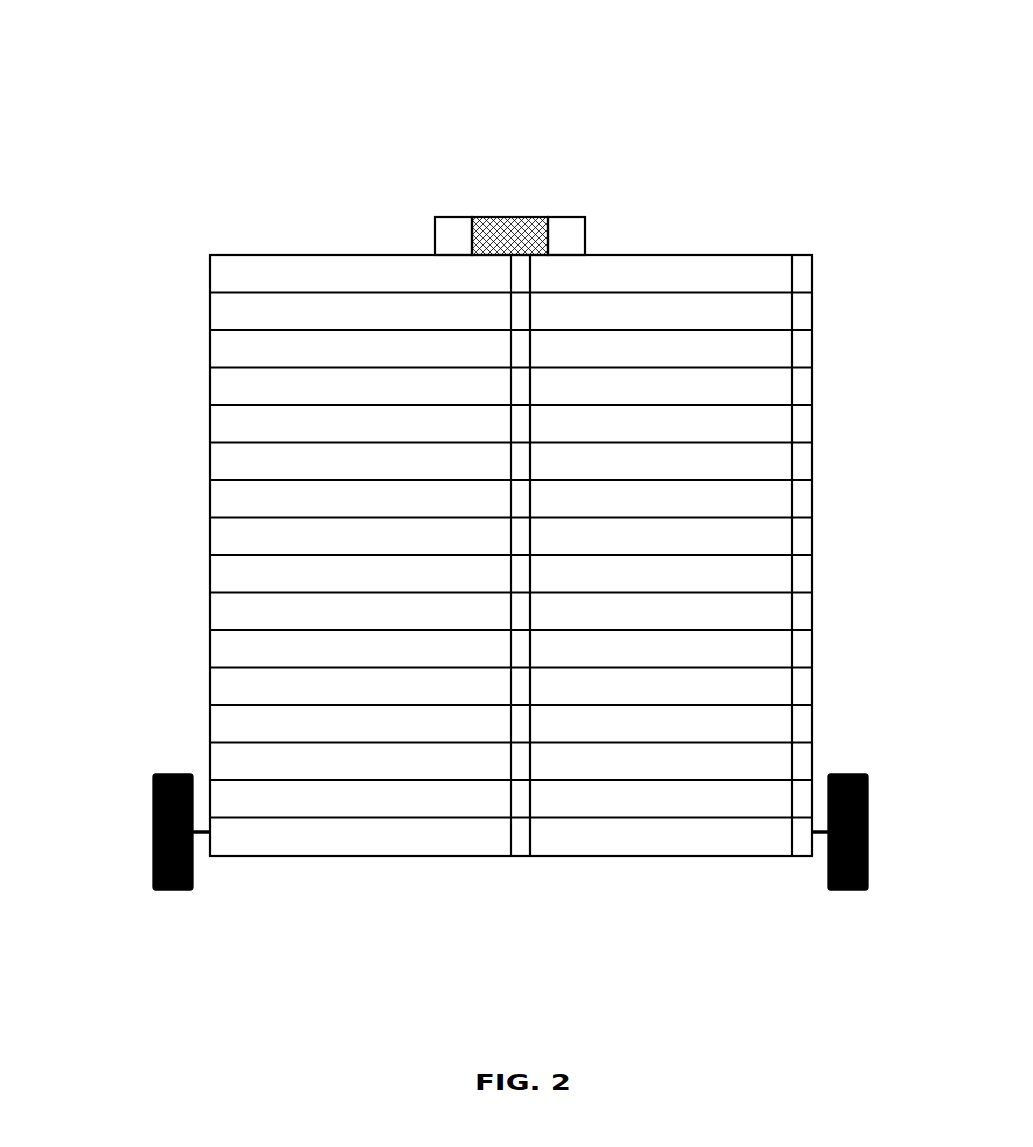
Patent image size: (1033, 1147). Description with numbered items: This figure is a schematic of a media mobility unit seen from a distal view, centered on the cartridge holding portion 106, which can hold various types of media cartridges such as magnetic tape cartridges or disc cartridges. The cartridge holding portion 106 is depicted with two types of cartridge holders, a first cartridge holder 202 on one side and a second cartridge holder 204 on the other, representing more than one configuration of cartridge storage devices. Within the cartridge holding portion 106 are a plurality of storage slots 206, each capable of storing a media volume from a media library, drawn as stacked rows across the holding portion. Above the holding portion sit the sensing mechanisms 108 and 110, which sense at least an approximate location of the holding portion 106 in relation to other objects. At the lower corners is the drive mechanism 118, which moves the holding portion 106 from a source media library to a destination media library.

The cartridge holding portion 106 is at (112, 84).
The sensing mechanism 108 is at (448, 237).
The sensing mechanism 110 is at (572, 237).
The drive mechanism 118 is at (150, 856).
The first cartridge holder 202 is at (510, 178).
The second cartridge holder 204 is at (828, 250).
The storage slots 206 is at (221, 427).